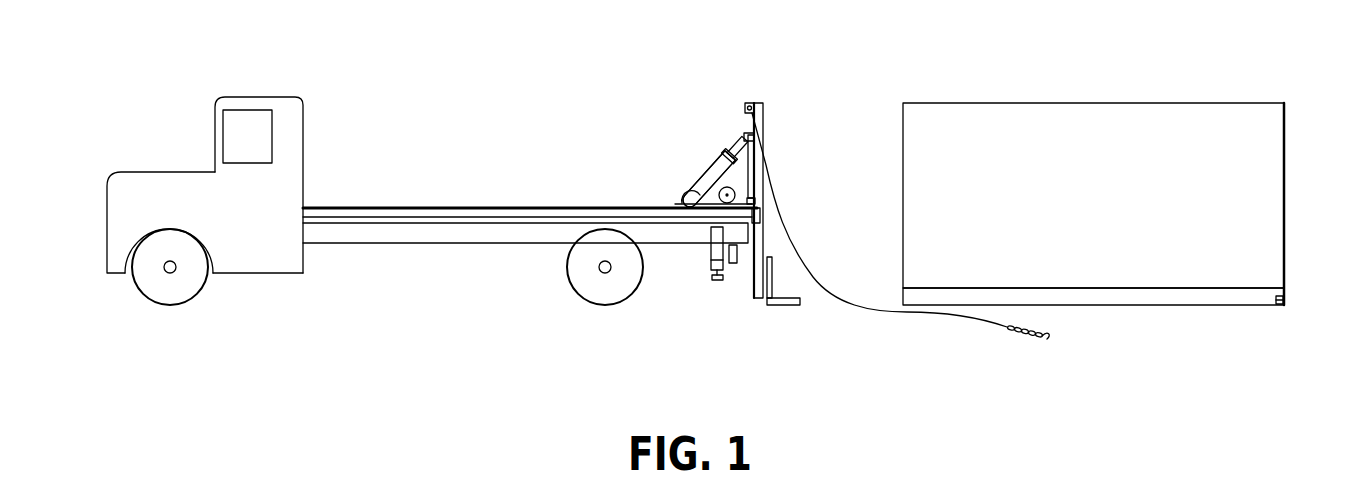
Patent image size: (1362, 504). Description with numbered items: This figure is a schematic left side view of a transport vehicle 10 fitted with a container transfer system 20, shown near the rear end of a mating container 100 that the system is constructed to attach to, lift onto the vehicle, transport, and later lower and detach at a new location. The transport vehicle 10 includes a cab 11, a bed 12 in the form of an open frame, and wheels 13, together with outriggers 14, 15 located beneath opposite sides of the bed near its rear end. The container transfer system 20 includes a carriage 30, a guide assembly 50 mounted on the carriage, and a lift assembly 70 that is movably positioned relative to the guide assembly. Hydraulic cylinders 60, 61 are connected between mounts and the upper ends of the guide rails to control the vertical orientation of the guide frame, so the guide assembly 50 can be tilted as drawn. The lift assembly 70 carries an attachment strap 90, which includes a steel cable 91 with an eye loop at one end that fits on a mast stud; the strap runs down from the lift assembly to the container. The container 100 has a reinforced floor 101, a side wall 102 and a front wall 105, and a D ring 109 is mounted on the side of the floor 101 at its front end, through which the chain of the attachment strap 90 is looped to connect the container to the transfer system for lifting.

The transport vehicle 10 is at (304, 90).
The cab 11 is at (166, 183).
The bed 12 is at (408, 237).
The wheels 13 is at (163, 285).
The outrigger 14 is at (362, 215).
The outrigger 15 is at (715, 263).
The container transfer system 20 is at (704, 163).
The carriage 30 is at (697, 193).
The guide assembly 50 is at (751, 178).
The hydraulic cylinder 60 is at (705, 180).
The hydraulic cylinder 61 is at (707, 180).
The lift assembly 70 is at (766, 135).
The attachment strap 90 is at (858, 310).
The steel cable 91 is at (1043, 340).
The container 100 is at (1208, 103).
The reinforced floor 101 is at (1142, 297).
The side wall 102 is at (1093, 195).
The front wall 105 is at (1277, 198).
The D ring 109 is at (1278, 305).